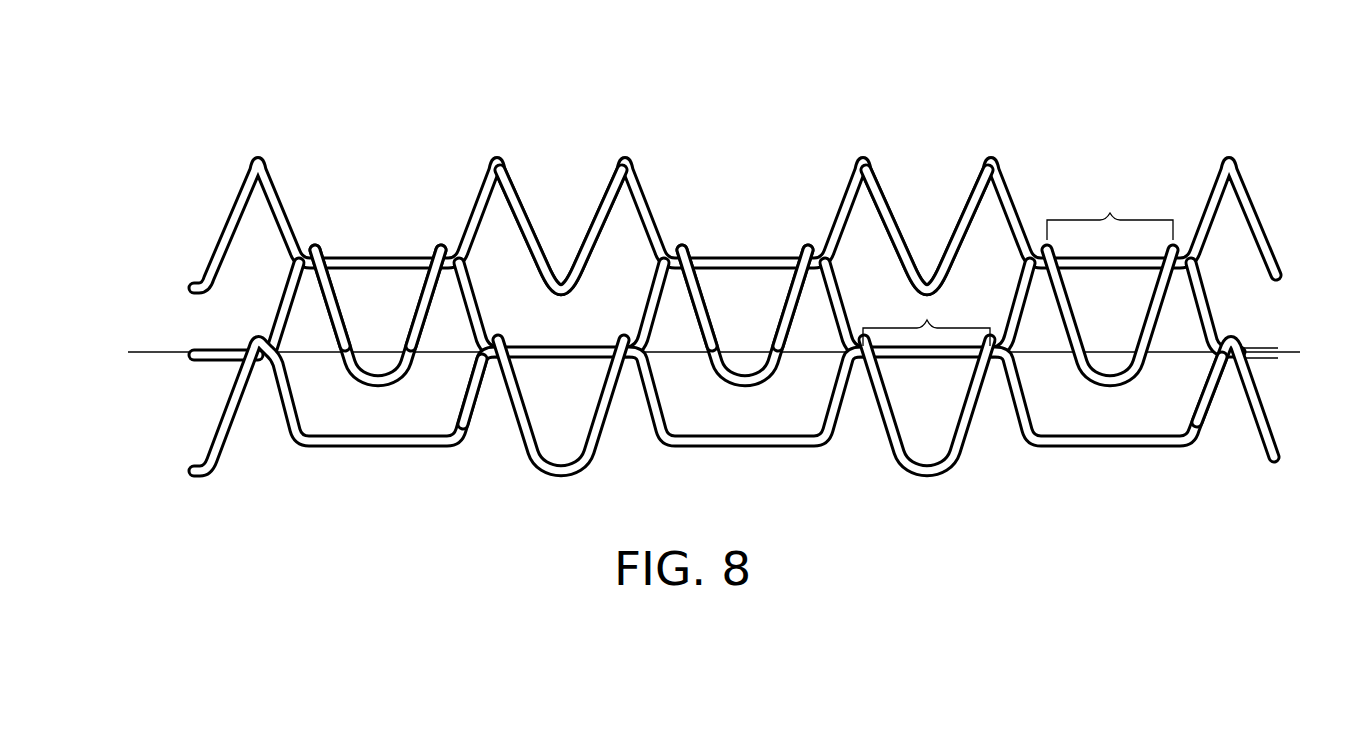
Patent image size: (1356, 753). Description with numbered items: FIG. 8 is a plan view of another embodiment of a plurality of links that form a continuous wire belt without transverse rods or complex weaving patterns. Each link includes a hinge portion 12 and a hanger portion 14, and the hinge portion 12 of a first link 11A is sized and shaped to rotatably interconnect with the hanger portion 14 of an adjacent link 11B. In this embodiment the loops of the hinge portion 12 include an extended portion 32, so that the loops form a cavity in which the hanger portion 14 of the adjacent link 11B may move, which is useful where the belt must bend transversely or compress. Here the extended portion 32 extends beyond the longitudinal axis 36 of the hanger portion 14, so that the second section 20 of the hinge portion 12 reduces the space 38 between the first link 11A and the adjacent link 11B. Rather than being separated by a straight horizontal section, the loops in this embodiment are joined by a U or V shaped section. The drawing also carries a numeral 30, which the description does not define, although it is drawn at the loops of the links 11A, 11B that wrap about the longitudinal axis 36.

The first link 11A is at (1252, 173).
The adjacent link 11B is at (220, 343).
The hinge portion 12 is at (467, 187).
The hanger portion 14 is at (1018, 268).
The second section 20 is at (597, 214).
The connecting loops 30 is at (343, 372).
The extended portion 32 is at (405, 332).
The longitudinal axis 36 is at (131, 345).
The space 38 is at (427, 348).